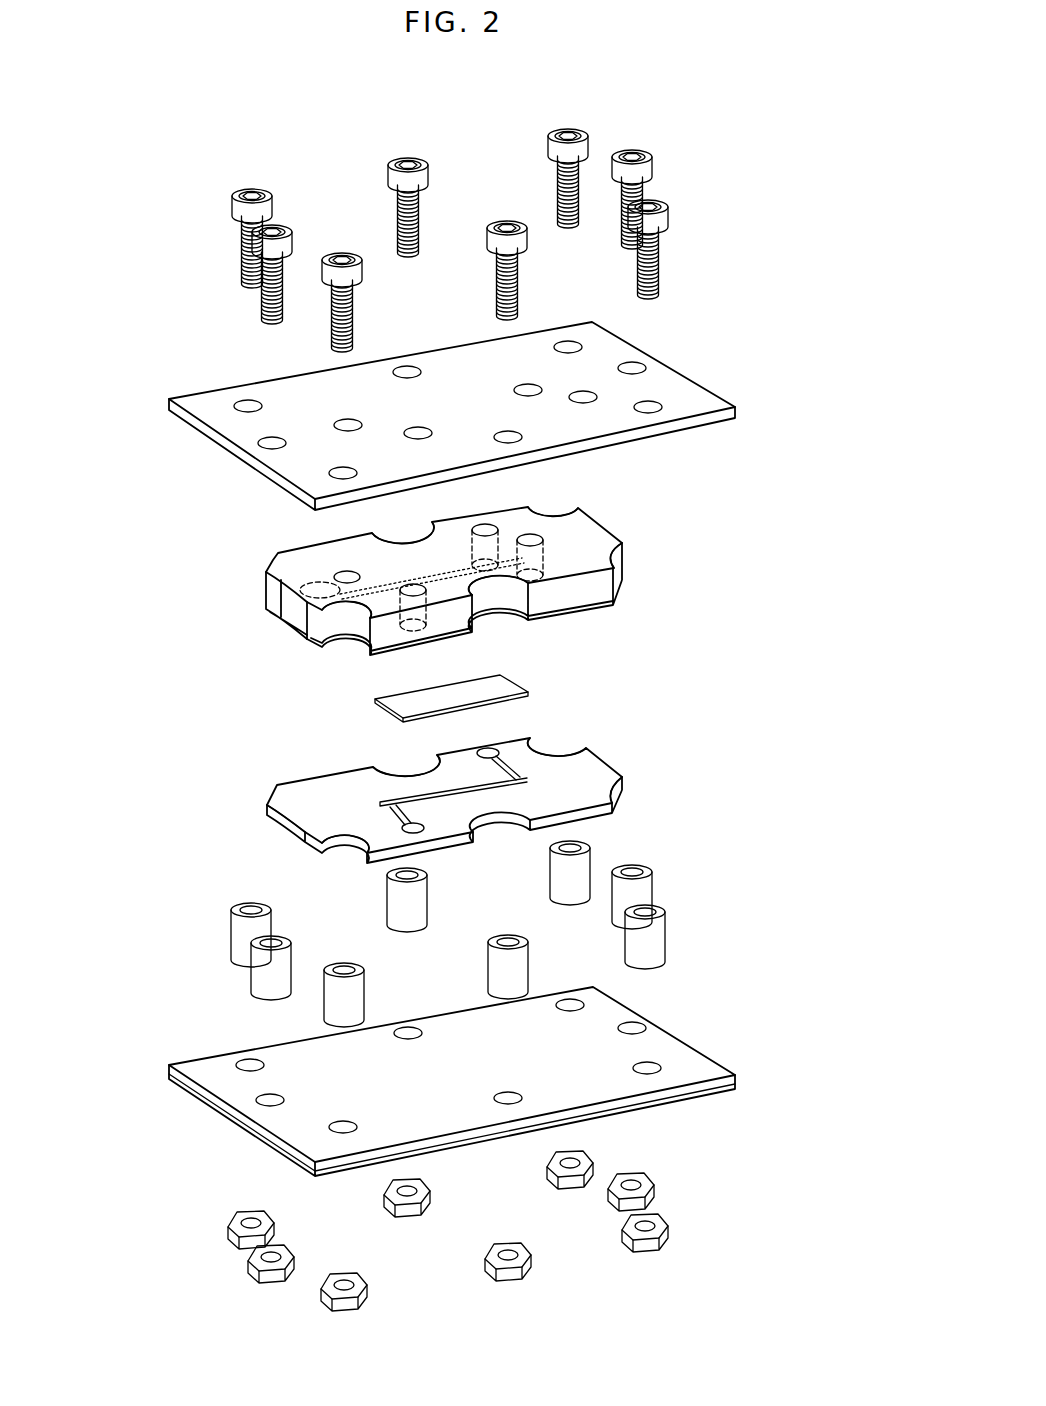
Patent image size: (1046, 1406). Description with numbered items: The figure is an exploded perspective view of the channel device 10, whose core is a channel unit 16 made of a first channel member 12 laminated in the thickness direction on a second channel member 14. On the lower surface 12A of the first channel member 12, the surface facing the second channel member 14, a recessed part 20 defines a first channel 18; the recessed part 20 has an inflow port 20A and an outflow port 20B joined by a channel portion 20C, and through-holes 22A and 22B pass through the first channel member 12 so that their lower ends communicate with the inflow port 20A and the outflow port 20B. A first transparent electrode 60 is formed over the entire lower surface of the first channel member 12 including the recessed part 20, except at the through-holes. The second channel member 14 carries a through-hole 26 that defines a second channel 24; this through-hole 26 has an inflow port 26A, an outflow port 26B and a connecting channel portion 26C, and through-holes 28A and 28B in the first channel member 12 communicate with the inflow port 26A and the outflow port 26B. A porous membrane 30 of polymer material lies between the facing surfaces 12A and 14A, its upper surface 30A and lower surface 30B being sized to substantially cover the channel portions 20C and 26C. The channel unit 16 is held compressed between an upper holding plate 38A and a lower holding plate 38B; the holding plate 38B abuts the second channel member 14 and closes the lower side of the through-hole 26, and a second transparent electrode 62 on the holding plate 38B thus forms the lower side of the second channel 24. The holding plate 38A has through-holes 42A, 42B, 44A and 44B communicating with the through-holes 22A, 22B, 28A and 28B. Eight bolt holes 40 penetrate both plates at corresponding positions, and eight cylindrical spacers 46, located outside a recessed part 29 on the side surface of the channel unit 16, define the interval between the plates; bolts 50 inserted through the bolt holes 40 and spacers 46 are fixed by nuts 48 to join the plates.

The channel device 10 is at (697, 175).
The first channel member 12 is at (597, 612).
The surface 12A is at (582, 604).
The second channel member 14 is at (594, 776).
The facing surface 14A is at (303, 790).
The channel unit 16 is at (703, 638).
The first channel 18 is at (268, 526).
The recessed part 20 is at (482, 608).
The inflow port 20A is at (350, 628).
The outflow port 20B is at (542, 592).
The channel portion 20C is at (420, 620).
The through-hole 22A is at (300, 596).
The through-hole 22B is at (535, 547).
The second channel 24 is at (448, 808).
The through-hole 26 is at (498, 800).
The inflow port 26A is at (398, 830).
The outflow port 26B is at (485, 752).
The channel portion 26C is at (420, 798).
The through-hole 28A is at (389, 592).
The through-hole 28B is at (478, 590).
The recessed part 29 is at (602, 530).
The porous membrane 30 is at (505, 688).
The upper surface 30A is at (392, 698).
The lower surface 30B is at (398, 718).
The holding plate 38A is at (672, 390).
The holding plate 38B is at (682, 1102).
The bolt hole 40 is at (268, 446).
The through-hole 42A is at (343, 423).
The through-hole 42B is at (583, 395).
The through-hole 44A is at (420, 430).
The through-hole 44B is at (524, 386).
The spacer 46 is at (658, 932).
The nut 48 is at (246, 1266).
The bolt 50 is at (392, 163).
The first transparent electrode 60 is at (270, 610).
The second transparent electrode 62 is at (612, 1017).